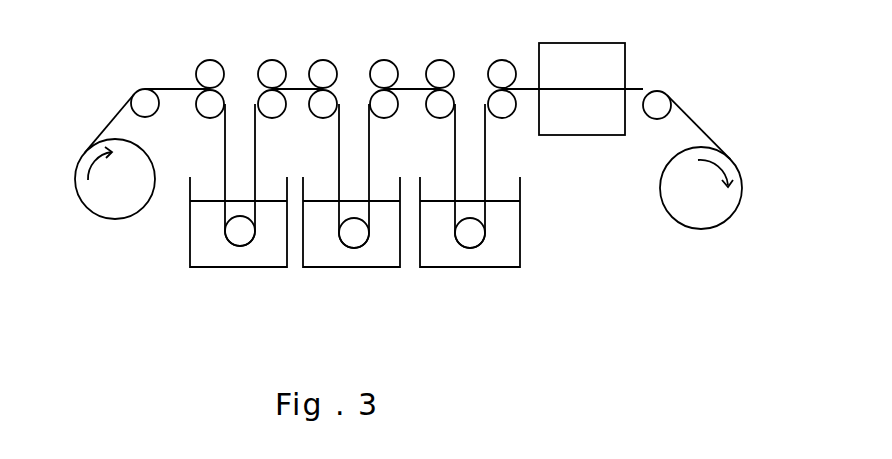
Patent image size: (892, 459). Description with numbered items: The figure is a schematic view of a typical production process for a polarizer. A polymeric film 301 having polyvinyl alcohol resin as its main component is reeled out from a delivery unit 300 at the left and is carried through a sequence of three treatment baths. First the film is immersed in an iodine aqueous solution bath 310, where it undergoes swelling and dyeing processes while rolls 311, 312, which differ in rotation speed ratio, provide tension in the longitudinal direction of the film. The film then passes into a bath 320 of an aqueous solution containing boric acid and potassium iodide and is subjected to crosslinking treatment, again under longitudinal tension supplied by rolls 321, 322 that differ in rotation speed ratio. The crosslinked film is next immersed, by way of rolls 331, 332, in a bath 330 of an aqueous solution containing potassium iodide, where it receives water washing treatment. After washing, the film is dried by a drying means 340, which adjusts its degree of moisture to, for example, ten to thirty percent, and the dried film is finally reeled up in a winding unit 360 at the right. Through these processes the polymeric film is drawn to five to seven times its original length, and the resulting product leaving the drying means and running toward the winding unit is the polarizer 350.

The delivery unit 300 is at (95, 196).
The polymeric film 301 is at (115, 117).
The iodine aqueous solution bath 310 is at (238, 258).
The roll 311 is at (212, 72).
The roll 312 is at (270, 72).
The bath of aqueous solution containing boric acid and potassium iodide 320 is at (362, 259).
The roll 321 is at (323, 72).
The roll 322 is at (383, 72).
The bath of aqueous solution containing potassium iodide 330 is at (470, 258).
The roll 331 is at (438, 73).
The roll 332 is at (500, 72).
The drying means 340 is at (578, 62).
The polarizer 350 is at (696, 123).
The winding unit 360 is at (722, 206).